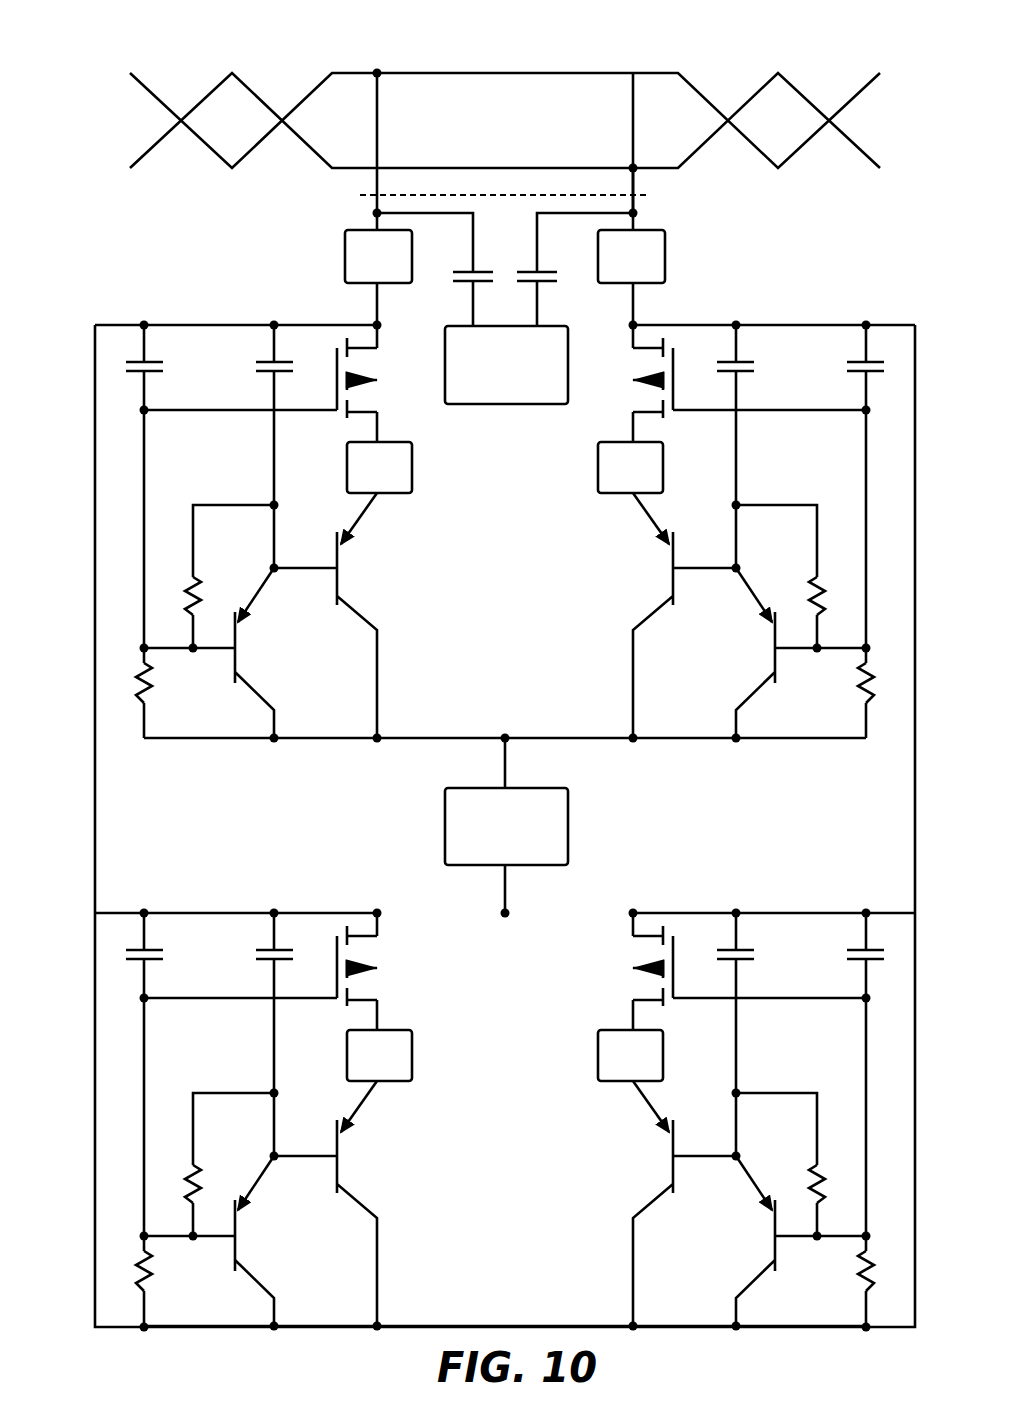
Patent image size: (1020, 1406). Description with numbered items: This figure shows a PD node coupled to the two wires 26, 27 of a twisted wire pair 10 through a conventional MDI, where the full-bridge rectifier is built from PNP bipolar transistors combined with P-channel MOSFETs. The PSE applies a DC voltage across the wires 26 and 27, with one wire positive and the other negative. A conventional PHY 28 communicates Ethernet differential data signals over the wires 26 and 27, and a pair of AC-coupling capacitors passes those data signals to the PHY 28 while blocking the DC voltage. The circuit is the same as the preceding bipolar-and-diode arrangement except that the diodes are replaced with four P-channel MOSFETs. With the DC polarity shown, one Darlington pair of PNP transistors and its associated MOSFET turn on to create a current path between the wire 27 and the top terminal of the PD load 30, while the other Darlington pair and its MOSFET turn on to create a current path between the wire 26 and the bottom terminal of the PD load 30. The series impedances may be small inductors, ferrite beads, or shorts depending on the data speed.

The twisted wire pair 10 is at (333, 44).
The wire 26 is at (143, 160).
The wire 27 is at (143, 82).
The PHY 28 is at (483, 405).
The PD load 30 is at (445, 818).